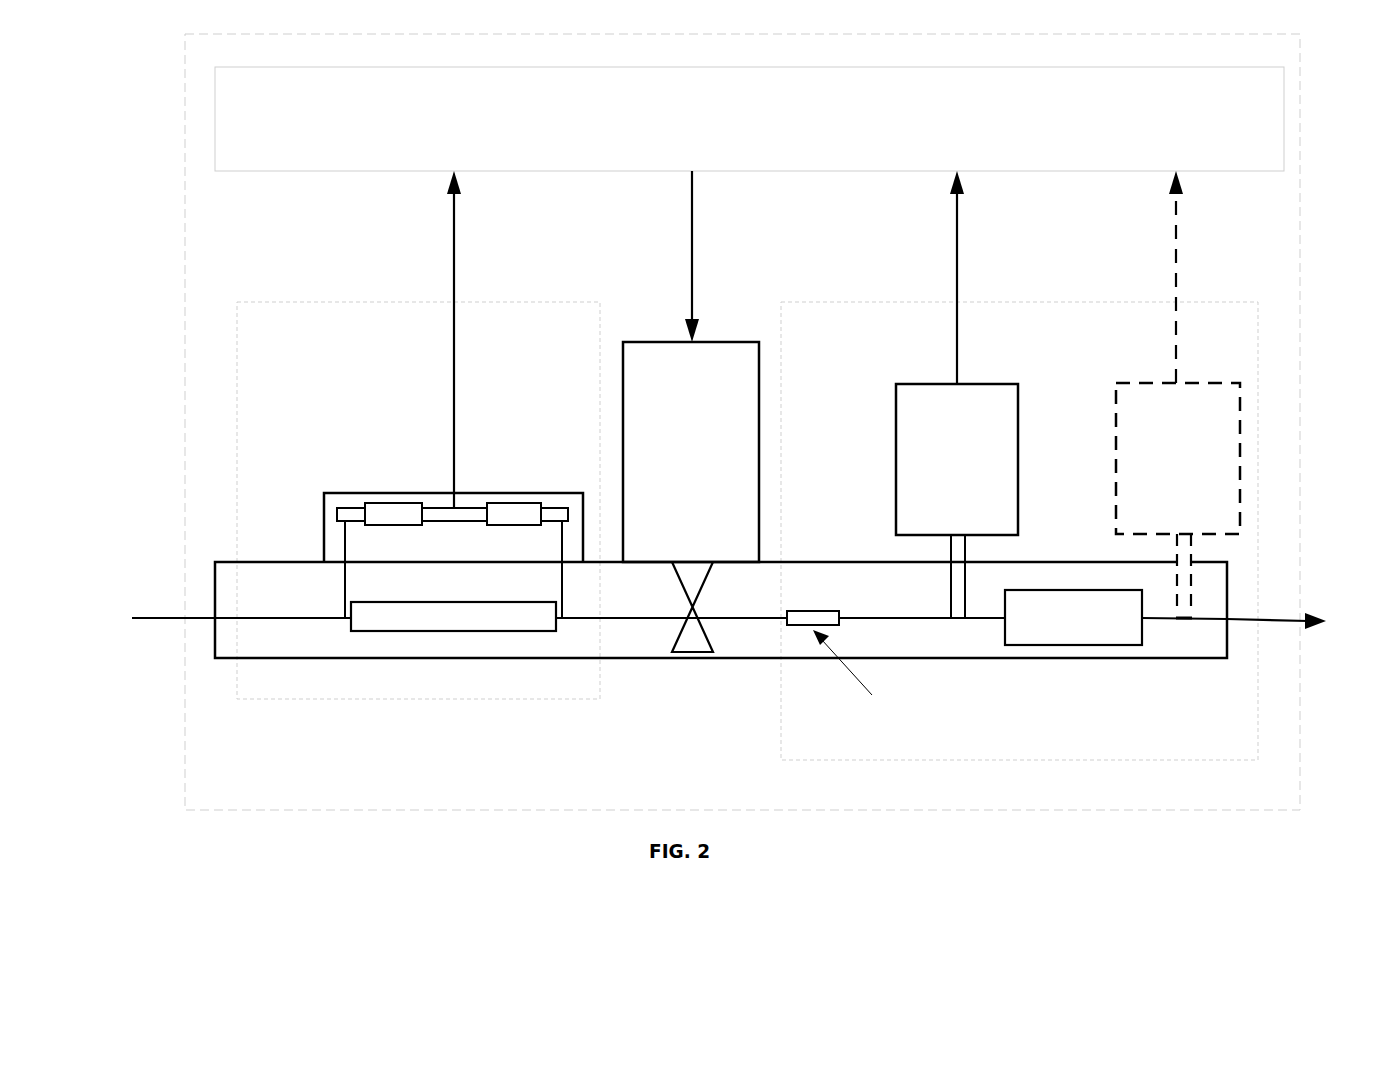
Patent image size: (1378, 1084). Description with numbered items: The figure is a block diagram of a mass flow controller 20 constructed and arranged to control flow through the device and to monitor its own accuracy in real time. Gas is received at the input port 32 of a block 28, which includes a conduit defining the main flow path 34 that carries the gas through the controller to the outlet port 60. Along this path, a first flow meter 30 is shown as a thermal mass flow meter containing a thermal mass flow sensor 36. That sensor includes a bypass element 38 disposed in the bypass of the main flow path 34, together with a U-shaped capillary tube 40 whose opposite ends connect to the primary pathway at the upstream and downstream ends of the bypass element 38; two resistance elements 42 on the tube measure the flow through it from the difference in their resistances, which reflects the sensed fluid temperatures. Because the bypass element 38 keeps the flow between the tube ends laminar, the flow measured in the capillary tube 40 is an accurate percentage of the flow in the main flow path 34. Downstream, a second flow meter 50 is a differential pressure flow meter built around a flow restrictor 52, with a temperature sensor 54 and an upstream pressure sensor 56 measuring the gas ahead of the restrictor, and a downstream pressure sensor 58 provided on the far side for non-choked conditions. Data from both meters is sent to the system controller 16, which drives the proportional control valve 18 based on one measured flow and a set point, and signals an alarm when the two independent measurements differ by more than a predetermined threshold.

The system controller 16 is at (749, 119).
The proportional control valve 18 is at (653, 342).
The mass flow controller 20 is at (183, 198).
The block 28 is at (702, 660).
The first flow meter 30 is at (396, 284).
The input port 32 is at (213, 627).
The main flow path 34 is at (318, 614).
The thermal mass flow sensor 36 is at (438, 500).
The bypass element 38 is at (463, 600).
The U-shaped capillary tube 40 is at (349, 547).
The resistance elements 42 is at (380, 502).
The second flow meter 50 is at (768, 701).
The flow restrictor 52 is at (1075, 590).
The temperature sensor 54 is at (815, 611).
The upstream pressure sensor 56 is at (940, 382).
The downstream pressure sensor 58 is at (1157, 380).
The outlet port 60 is at (1237, 619).